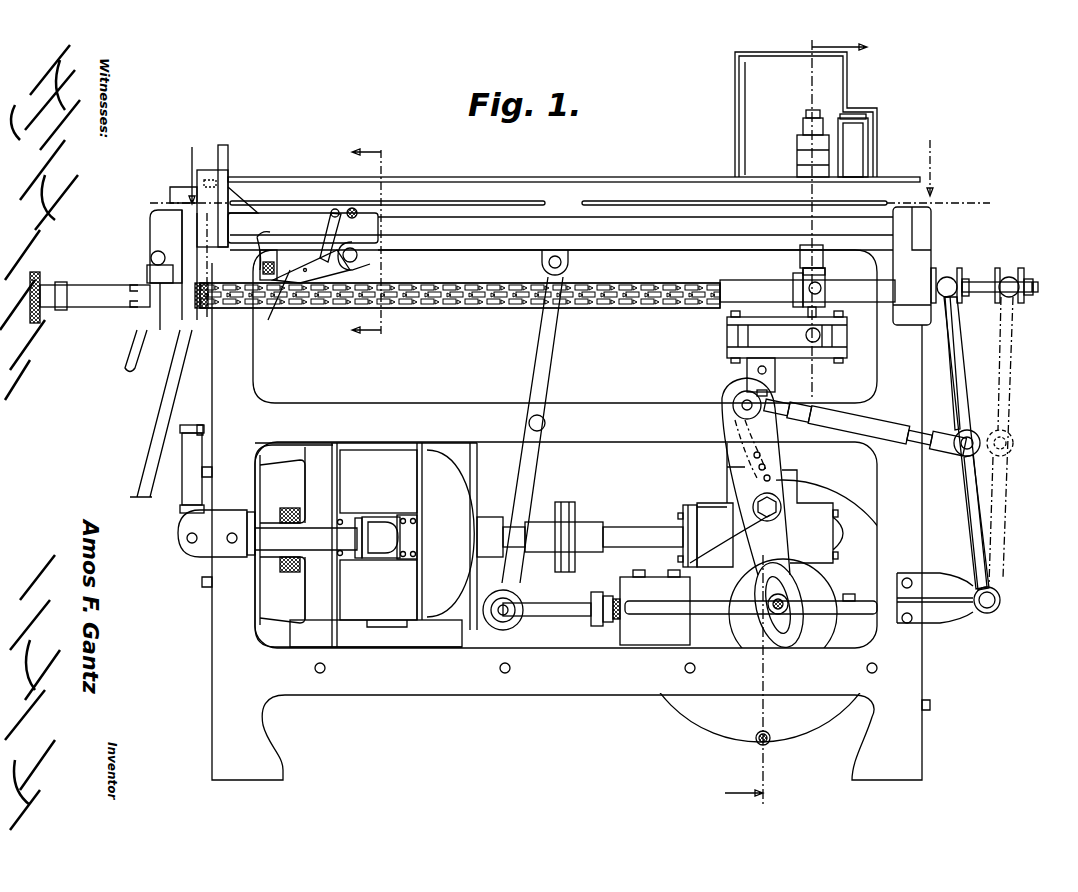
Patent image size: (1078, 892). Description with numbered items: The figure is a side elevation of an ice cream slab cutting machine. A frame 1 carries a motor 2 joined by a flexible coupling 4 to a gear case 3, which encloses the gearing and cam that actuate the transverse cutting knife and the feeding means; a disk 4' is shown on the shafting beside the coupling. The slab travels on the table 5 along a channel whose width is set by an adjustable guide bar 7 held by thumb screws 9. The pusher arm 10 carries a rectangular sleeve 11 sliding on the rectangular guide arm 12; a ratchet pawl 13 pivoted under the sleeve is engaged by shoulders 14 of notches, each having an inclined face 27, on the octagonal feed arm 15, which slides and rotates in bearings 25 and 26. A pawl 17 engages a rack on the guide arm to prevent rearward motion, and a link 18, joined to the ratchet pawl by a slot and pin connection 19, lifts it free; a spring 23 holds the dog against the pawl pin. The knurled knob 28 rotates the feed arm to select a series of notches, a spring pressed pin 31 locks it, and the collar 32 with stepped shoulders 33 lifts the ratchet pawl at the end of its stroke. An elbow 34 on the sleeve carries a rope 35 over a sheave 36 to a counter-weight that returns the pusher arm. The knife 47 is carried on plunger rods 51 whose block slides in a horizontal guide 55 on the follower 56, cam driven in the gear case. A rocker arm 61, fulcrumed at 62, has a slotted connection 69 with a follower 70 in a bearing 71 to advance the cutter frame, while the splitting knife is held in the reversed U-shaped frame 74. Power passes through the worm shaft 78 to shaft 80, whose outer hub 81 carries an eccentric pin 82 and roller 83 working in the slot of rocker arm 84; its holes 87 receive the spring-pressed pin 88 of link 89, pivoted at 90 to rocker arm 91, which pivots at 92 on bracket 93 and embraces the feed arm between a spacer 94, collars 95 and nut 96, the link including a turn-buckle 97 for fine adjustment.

The frame 1 is at (273, 760).
The motor 2 is at (351, 536).
The gear case 3 is at (707, 520).
The flexible coupling 4 is at (791, 424).
The disk 4' is at (568, 523).
The table 5 is at (608, 160).
The adjustable guide bar 7 is at (470, 178).
The thumb screws 9 is at (232, 183).
The pusher arm 10 is at (229, 170).
The rectangular sleeve 11 is at (303, 228).
The rectangular guide arm 12 is at (458, 250).
The ratchet pawl 13 is at (290, 284).
The shoulders 14 is at (272, 308).
The feed arm 15 is at (718, 304).
The pawl 17 is at (334, 210).
The link 18 is at (330, 232).
The slot and pin connection 19 is at (356, 244).
The spring 23 is at (260, 258).
The bearing 25 is at (148, 308).
The bearing 26 is at (920, 275).
The inclined face 27 is at (495, 308).
The knurled knob 28 is at (42, 276).
The spring pressed pin 31 is at (150, 258).
The collar 32 is at (792, 276).
The steps or shoulders 33 is at (826, 272).
The elbow 34 is at (343, 277).
The rope or cable 35 is at (179, 265).
The sheave 36 is at (257, 242).
The knife 47 is at (800, 158).
The plunger rods 51 is at (822, 333).
The horizontal guide 55 is at (747, 350).
The follower 56 is at (747, 374).
The rocker arm 61 is at (548, 382).
The fulcrum 62 is at (552, 424).
The slotted connection 69 is at (516, 622).
The follower 70 is at (560, 614).
The bearing 71 is at (748, 607).
The reversed U-shaped frame 74 is at (855, 165).
The worm shaft 78 is at (628, 532).
The shaft 80 is at (782, 512).
The hub 81 is at (755, 640).
The eccentric pin 82 is at (788, 598).
The roller 83 is at (783, 647).
The rocker arm 84 is at (758, 537).
The series of holes 87 is at (770, 472).
The spring-pressed pin 88 is at (733, 405).
The link 89 is at (770, 395).
The pivot 90 is at (960, 455).
The rocker arm 91 is at (968, 495).
The pivot 92 is at (988, 614).
The bracket 93 is at (928, 623).
The spacer 94 is at (958, 272).
The collars 95 is at (965, 283).
The nut 96 is at (967, 296).
The turn-buckle 97 is at (868, 428).